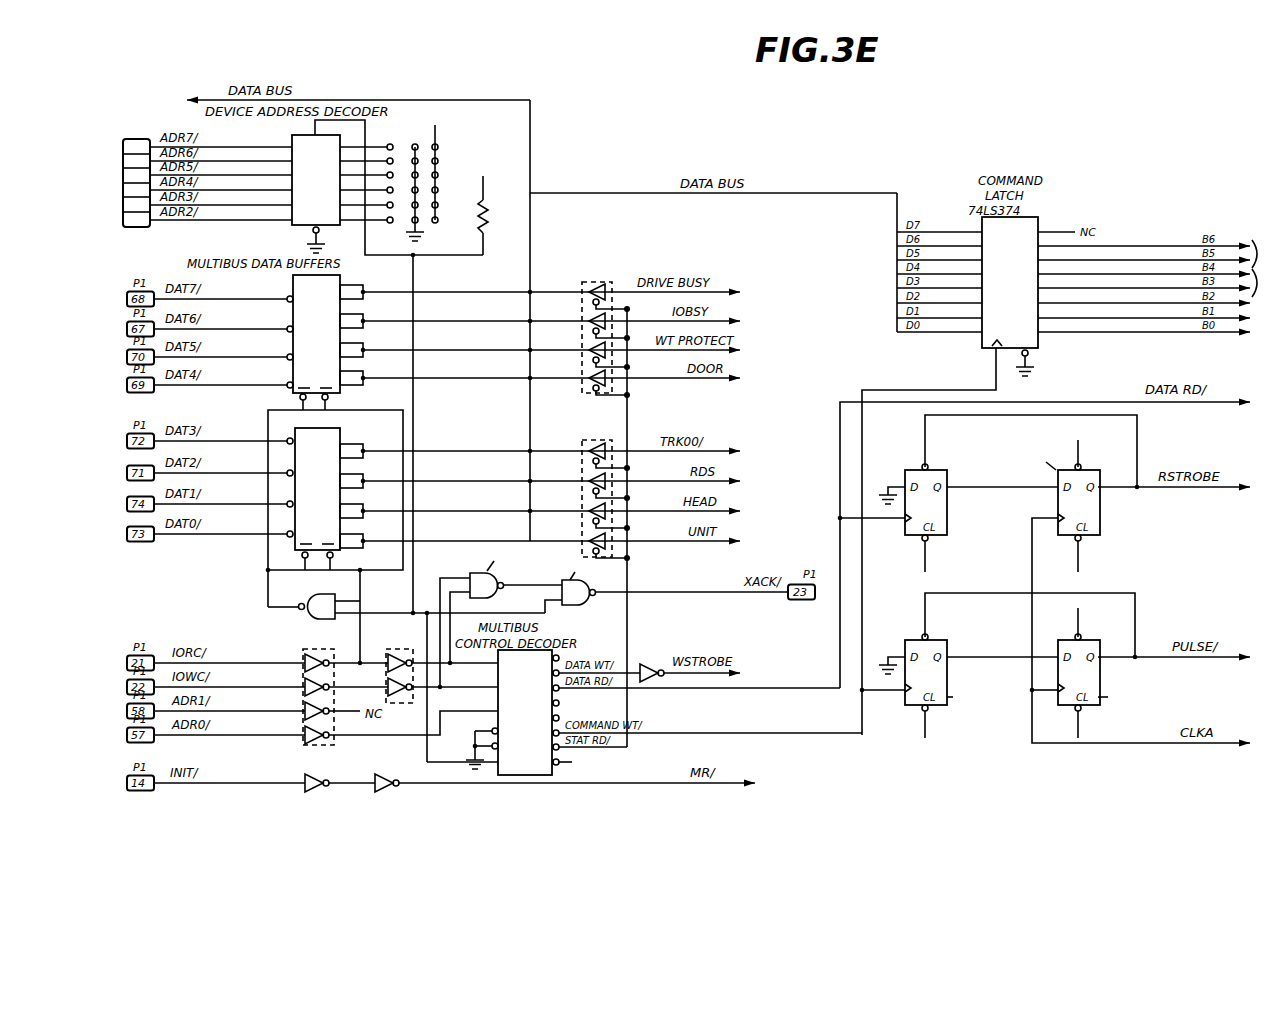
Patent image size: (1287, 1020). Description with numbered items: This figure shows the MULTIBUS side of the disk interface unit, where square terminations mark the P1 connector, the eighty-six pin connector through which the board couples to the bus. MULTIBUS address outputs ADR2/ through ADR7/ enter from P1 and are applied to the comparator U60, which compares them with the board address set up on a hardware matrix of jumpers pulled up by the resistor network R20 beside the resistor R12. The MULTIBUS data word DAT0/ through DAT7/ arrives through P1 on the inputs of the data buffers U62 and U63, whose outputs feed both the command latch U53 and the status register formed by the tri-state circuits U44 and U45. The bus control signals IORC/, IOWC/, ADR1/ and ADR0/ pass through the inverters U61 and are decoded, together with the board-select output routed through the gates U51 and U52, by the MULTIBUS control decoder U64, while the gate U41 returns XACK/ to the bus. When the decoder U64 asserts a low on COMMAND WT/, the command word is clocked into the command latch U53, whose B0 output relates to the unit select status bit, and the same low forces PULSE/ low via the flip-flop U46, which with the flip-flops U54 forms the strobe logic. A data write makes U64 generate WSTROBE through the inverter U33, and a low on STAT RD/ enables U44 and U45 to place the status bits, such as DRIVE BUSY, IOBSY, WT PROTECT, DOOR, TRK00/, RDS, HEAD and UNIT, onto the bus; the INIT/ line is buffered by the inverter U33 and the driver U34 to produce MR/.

The connector P1 is at (136, 174).
The comparator U60 is at (387, 187).
The pull-up resistor network R20 is at (435, 181).
The resistor 2.2K R12 is at (493, 208).
The data buffer U62 is at (326, 342).
The data buffer U63 is at (326, 499).
The status register U44 is at (588, 323).
The status register U45 is at (588, 482).
The logic gate U51 is at (406, 599).
The logic gate U52 is at (501, 617).
The logic gate U41 is at (672, 581).
The inverter U61 is at (347, 680).
The inverter U33 is at (484, 707).
The inverter U34 is at (391, 767).
The MULTIBUS control decoder U64 is at (549, 715).
The command latch U53 is at (1010, 296).
The flip-flop U54 is at (999, 493).
The flip-flop U46 is at (1009, 665).